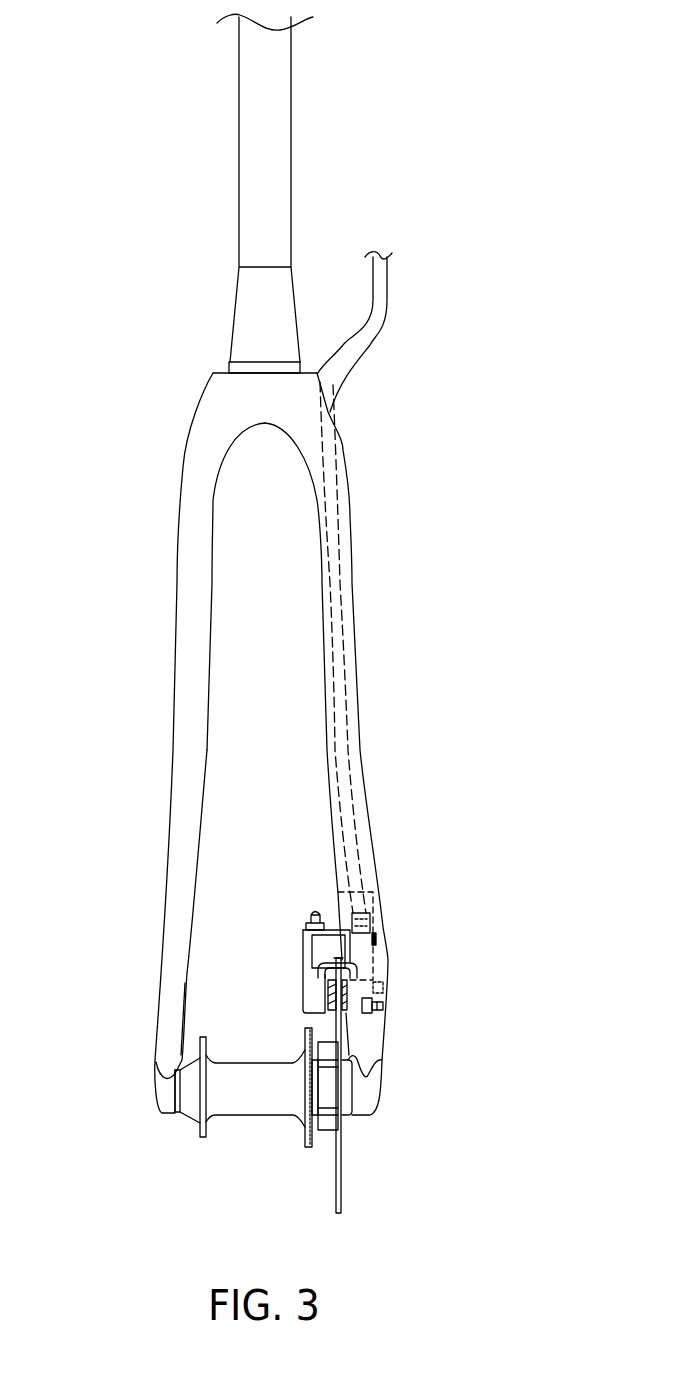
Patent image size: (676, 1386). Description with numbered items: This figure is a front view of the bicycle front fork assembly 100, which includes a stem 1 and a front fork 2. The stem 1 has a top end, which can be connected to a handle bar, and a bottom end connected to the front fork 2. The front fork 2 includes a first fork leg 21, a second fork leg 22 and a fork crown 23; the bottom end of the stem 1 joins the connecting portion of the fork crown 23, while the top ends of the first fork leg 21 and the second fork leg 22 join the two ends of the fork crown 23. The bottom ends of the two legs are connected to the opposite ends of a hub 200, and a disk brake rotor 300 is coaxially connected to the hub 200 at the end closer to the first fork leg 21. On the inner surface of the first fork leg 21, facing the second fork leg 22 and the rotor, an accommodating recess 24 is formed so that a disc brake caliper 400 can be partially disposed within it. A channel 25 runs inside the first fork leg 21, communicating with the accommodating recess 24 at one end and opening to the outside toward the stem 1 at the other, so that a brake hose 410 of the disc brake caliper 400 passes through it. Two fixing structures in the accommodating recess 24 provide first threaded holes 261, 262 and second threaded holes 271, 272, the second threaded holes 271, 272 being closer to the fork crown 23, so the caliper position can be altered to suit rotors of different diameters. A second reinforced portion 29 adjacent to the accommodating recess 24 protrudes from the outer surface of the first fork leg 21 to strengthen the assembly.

The stem 1 is at (239, 122).
The bicycle front fork assembly 100 is at (357, 213).
The brake hose 410 is at (390, 298).
The fork crown 23 is at (265, 373).
The front fork 2 is at (183, 470).
The second fork leg 22 is at (177, 597).
The first fork leg 21 is at (352, 597).
The channel 25 is at (343, 700).
The accommodating recess 24 is at (383, 897).
The second threaded hole 271 is at (380, 921).
The first threaded hole 261 is at (380, 942).
The second reinforced portion 29 is at (388, 960).
The second threaded hole 272 is at (385, 987).
The first threaded hole 262 is at (385, 1005).
The disc brake caliper 400 is at (327, 952).
The hub 200 is at (252, 1100).
The disk brake rotor 300 is at (342, 1186).